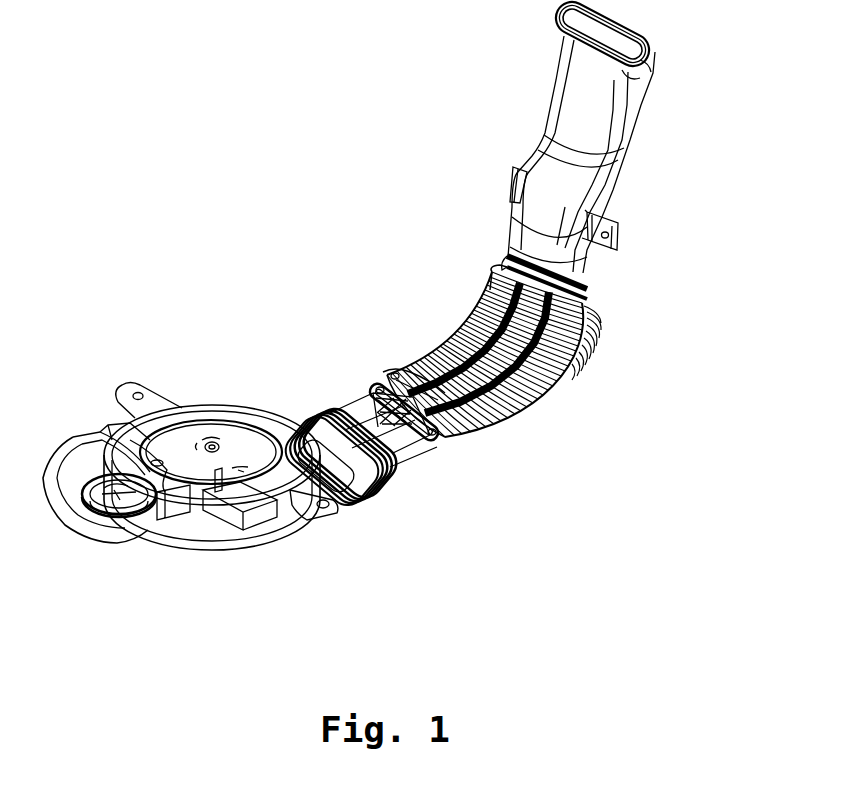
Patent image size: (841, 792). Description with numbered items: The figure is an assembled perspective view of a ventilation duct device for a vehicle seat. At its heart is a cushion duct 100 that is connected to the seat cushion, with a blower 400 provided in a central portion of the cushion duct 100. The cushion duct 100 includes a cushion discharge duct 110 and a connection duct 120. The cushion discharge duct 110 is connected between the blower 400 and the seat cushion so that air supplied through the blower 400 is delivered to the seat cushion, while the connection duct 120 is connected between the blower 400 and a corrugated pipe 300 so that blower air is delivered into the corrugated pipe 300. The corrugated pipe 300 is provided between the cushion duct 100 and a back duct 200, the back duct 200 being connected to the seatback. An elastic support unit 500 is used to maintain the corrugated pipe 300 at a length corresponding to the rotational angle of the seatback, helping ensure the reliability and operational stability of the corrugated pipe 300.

The cushion duct 100 is at (268, 506).
The cushion discharge duct 110 is at (132, 537).
The connection duct 120 is at (418, 468).
The back duct 200 is at (612, 168).
The corrugated pipe 300 is at (537, 407).
The blower 400 is at (228, 442).
The elastic support unit 500 is at (398, 366).